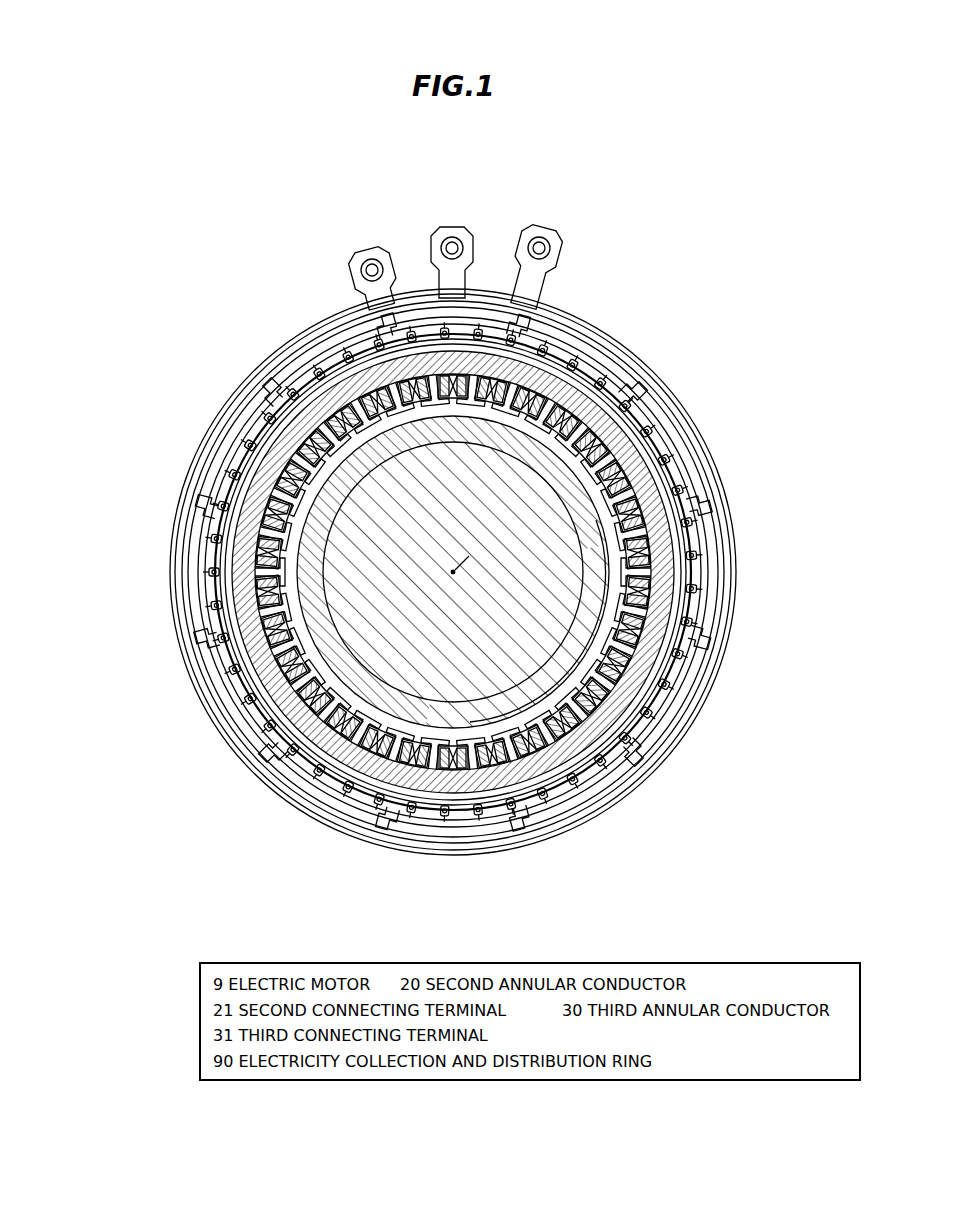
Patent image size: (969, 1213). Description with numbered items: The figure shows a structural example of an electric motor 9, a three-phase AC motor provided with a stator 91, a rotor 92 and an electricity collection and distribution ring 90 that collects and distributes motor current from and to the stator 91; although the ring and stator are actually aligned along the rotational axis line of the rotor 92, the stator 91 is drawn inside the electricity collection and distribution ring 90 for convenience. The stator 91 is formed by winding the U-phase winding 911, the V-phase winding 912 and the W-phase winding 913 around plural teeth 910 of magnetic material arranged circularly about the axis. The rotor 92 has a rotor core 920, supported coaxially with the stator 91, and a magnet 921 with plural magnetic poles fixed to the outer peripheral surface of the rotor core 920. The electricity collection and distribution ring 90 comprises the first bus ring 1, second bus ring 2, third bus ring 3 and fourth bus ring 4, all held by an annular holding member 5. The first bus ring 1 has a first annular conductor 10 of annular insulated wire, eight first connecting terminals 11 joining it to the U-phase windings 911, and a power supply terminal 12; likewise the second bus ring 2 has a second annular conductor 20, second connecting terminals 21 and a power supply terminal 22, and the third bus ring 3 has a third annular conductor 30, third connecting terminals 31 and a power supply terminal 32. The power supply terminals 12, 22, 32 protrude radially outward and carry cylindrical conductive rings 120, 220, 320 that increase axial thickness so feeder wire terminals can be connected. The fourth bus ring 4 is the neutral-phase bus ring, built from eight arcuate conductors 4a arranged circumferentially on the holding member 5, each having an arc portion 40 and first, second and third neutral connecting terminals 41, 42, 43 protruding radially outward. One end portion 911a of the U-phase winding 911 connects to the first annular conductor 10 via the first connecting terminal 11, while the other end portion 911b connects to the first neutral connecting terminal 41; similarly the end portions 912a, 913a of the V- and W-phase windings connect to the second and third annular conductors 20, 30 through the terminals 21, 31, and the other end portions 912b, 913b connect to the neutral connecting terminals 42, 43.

The first bus ring 1 is at (508, 817).
The second bus ring 2 is at (563, 810).
The third bus ring 3 is at (612, 798).
The fourth bus ring 4 is at (655, 733).
The holding member 5 is at (650, 775).
The electric motor 9 is at (797, 295).
The first annular conductor 10 is at (286, 380).
The first connecting terminal 11 is at (282, 408).
The power supply terminal 12 is at (366, 247).
The second annular conductor 20 is at (222, 469).
The second connecting terminal 21 is at (212, 489).
The power supply terminal 22 is at (447, 231).
The third annular conductor 30 is at (200, 628).
The third connecting terminal 31 is at (208, 648).
The power supply terminal 32 is at (536, 232).
The arc portion 40 is at (295, 762).
The first neutral connecting terminal 41 is at (275, 742).
The second neutral connecting terminal 42 is at (252, 725).
The third neutral connecting terminal 43 is at (320, 783).
The arcuate conductor 4a is at (236, 830).
The electricity collection and distribution ring 90 is at (612, 333).
The stator 91 is at (630, 372).
The rotor 92 is at (612, 418).
The conductive ring 120 is at (360, 272).
The conductive ring 220 is at (441, 250).
The conductive ring 320 is at (551, 251).
The tooth 910 is at (655, 445).
The U-phase winding 911 is at (668, 568).
The one end portion 911a is at (662, 595).
The another end portion 911b is at (672, 546).
The V-phase winding 912 is at (655, 642).
The one end portion 912a is at (645, 660).
The other end portion 912b is at (657, 625).
The W-phase winding 913 is at (632, 712).
The one end portion 913a is at (620, 730).
The other end portion 913b is at (640, 690).
The rotor core 920 is at (459, 678).
The magnet 921 is at (415, 712).